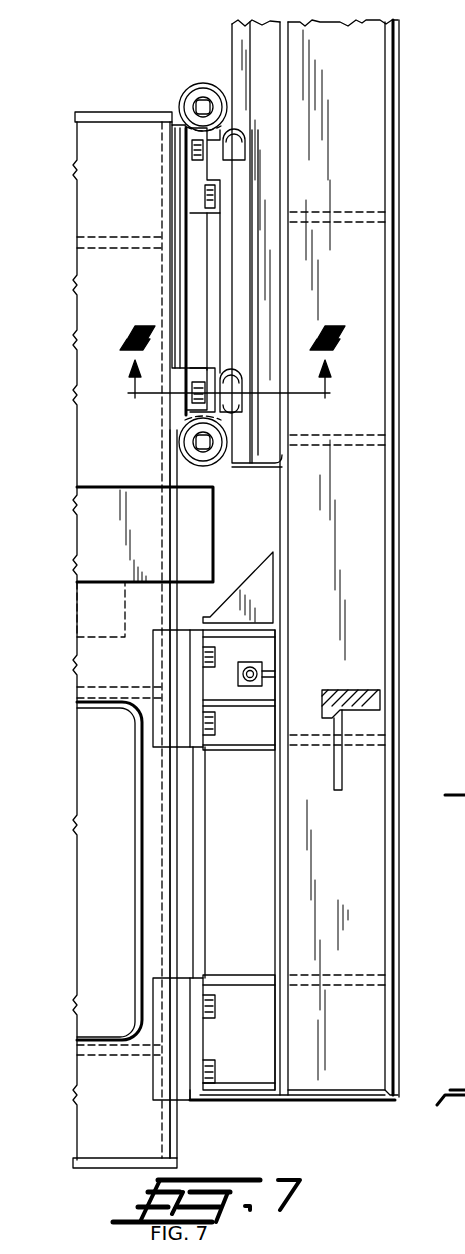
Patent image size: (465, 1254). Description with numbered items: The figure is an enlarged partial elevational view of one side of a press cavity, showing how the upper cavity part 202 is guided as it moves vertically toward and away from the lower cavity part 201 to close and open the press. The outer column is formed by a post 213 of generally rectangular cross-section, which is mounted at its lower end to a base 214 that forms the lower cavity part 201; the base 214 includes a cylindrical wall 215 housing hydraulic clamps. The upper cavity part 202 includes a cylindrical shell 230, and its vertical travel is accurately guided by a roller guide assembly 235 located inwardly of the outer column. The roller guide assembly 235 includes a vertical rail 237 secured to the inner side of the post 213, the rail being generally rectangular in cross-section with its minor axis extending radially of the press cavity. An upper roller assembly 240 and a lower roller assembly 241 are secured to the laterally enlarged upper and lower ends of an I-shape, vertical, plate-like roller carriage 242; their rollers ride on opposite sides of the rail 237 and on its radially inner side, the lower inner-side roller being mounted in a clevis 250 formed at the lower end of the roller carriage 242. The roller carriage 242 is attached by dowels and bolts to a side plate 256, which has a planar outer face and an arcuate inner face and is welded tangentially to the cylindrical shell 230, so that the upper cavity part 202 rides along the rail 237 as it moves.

The lower cavity part 201 is at (113, 708).
The upper cavity part 202 is at (100, 112).
The post 213 is at (398, 482).
The base 214 is at (175, 1122).
The cylindrical wall 215 is at (102, 1057).
The cylindrical shell 230 is at (139, 439).
The roller guide assembly 235 is at (185, 95).
The vertical rail 237 is at (232, 30).
The upper roller assembly 240 is at (243, 103).
The lower roller assembly 241 is at (257, 344).
The roller carriage 242 is at (200, 258).
The clevis 250 is at (452, 170).
The side plate 256 is at (176, 287).